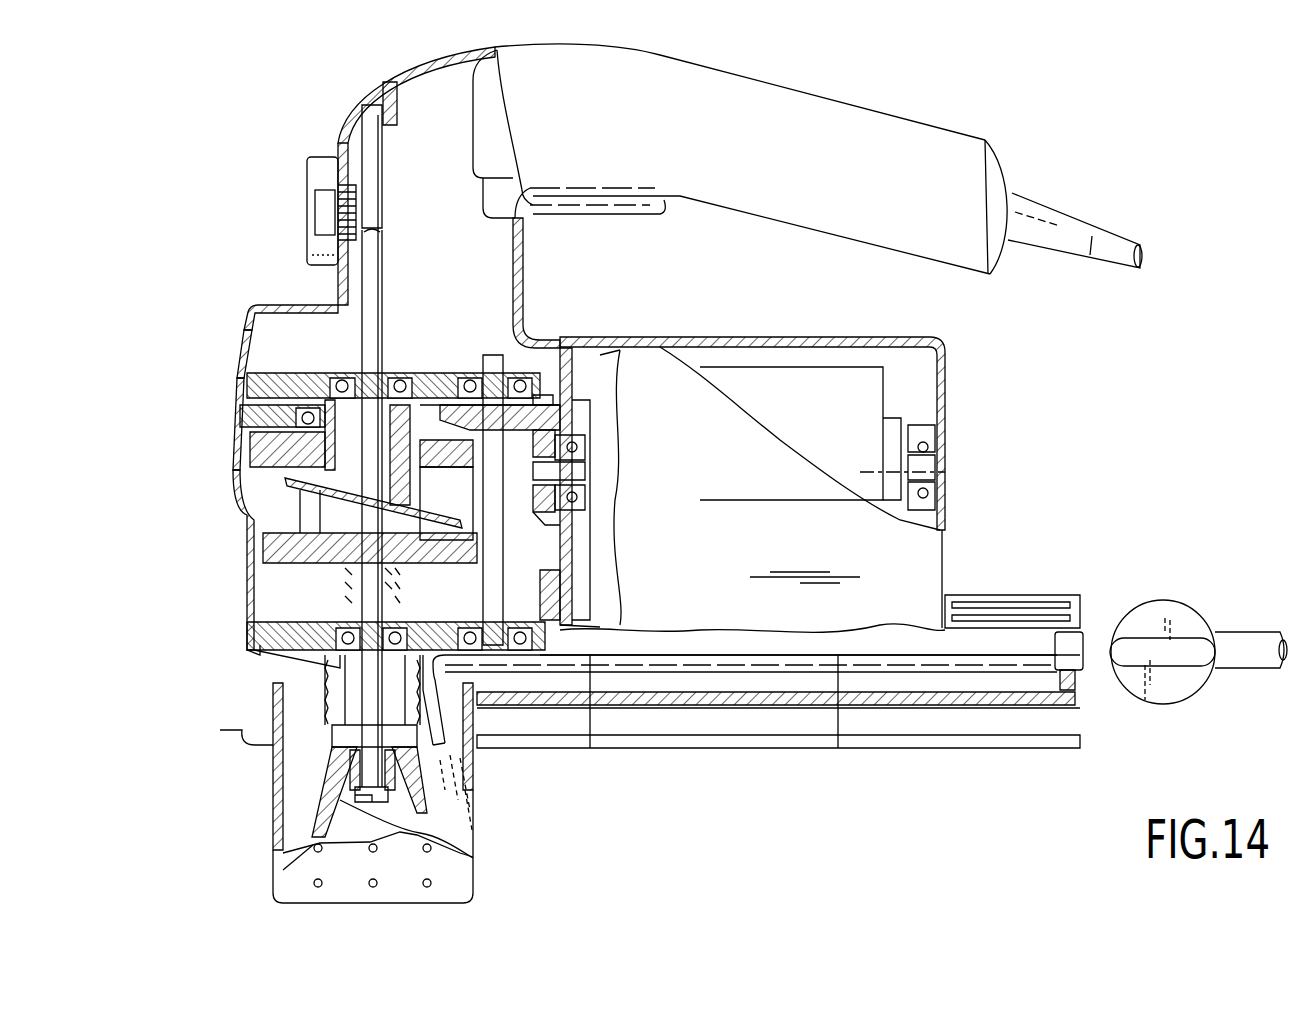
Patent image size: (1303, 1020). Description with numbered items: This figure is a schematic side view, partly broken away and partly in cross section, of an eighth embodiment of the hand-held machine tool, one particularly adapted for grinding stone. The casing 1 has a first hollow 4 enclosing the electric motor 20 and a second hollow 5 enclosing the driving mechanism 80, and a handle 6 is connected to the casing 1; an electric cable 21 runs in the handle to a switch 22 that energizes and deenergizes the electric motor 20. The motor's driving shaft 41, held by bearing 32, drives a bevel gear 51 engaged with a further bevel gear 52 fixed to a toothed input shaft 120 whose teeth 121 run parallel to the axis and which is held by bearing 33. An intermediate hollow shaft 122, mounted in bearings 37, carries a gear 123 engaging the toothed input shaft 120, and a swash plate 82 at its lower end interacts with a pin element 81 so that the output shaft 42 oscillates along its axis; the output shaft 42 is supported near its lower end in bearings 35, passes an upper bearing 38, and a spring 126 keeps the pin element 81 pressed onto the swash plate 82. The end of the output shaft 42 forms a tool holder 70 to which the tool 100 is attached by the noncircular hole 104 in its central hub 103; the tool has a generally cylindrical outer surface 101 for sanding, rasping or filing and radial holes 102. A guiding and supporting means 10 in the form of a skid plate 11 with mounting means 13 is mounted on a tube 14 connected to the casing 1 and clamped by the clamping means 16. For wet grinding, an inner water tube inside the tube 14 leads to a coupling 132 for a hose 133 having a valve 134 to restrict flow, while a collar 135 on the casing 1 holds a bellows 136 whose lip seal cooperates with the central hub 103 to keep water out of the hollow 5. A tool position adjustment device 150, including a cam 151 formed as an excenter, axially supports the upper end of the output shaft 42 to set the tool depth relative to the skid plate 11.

The casing 1 is at (240, 316).
The first hollow 4 is at (918, 380).
The second hollow 5 is at (265, 620).
The handle 6 is at (918, 135).
The guiding and supporting means 10 is at (887, 775).
The skid plate 11 is at (585, 745).
The mounting means 13 is at (712, 722).
The tube 14 is at (590, 700).
The clamping means 16 is at (965, 695).
The electric motor 20 is at (828, 382).
The electric cable 21 is at (1105, 240).
The switch 22 is at (642, 210).
The bearing 32 is at (578, 497).
The bearing 33 is at (525, 627).
The bearing 35 is at (405, 615).
The bearing 37 is at (471, 378).
The upper bearing 38 is at (400, 375).
The driving shaft 41 is at (575, 462).
The output shaft 42 is at (380, 277).
The bevel gear 51 is at (565, 418).
The bevel gear 52 is at (570, 390).
The tool holder 70 is at (370, 802).
The drive assembly 80 is at (205, 474).
The pin element 81 is at (300, 505).
The swash plate 82 is at (285, 480).
The tool 100 is at (252, 843).
The outer surface 101 is at (470, 770).
The radial holes 102 is at (305, 857).
The central hub 103 is at (330, 750).
The noncircular hole 104 is at (335, 760).
The toothed input shaft 120 is at (520, 338).
The teeth 121 is at (560, 555).
The intermediate hollow shaft 122 is at (260, 380).
The gear 123 is at (265, 440).
The spring 126 is at (260, 590).
The coupling 132 is at (1085, 640).
The hose 133 is at (1235, 643).
The valve 134 is at (1173, 613).
The collar 135 is at (320, 655).
The bellows 136 is at (340, 680).
The tool position adjustment device 150 is at (292, 215).
The cam 151 is at (376, 212).